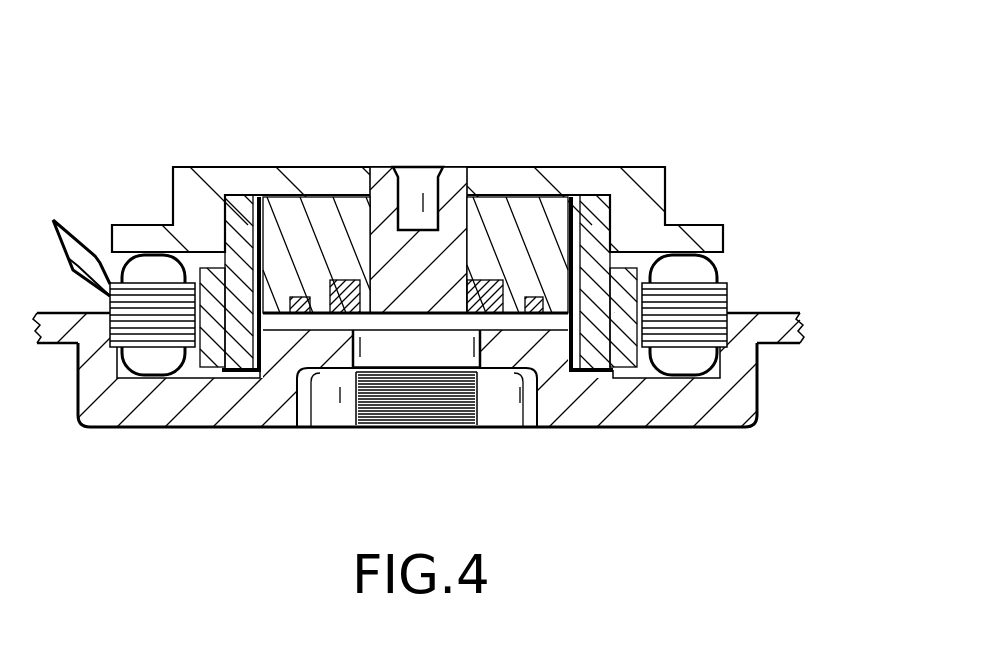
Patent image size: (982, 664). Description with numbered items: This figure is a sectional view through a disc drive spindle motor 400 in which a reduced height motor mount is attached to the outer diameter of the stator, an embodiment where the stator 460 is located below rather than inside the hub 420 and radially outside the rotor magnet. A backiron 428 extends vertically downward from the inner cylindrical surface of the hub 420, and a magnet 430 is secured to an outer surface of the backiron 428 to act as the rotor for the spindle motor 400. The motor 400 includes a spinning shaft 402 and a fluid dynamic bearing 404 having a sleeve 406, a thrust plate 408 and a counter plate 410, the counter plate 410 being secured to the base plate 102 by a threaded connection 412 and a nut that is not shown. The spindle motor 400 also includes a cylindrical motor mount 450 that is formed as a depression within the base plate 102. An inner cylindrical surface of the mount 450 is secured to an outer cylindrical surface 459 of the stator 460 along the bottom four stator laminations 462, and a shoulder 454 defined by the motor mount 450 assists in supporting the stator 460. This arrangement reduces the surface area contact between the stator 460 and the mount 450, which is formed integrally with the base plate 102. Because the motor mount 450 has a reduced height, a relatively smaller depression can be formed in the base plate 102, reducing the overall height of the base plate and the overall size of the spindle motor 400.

The spindle motor 400 is at (156, 116).
The spinning shaft 402 is at (450, 177).
The fluid dynamic bearing 404 is at (452, 341).
The sleeve 406 is at (325, 208).
The thrust plate 408 is at (345, 303).
The counter plate 410 is at (372, 322).
The threaded connection 412 is at (440, 403).
The hub 420 is at (653, 178).
The backiron 428 is at (240, 205).
The magnet 430 is at (623, 355).
The motor mount 450 is at (737, 390).
The shoulder 454 is at (112, 355).
The outer cylindrical surface 459 is at (728, 306).
The stator 460 is at (735, 279).
The stator laminations 462 is at (69, 242).
The base plate 102 is at (797, 333).